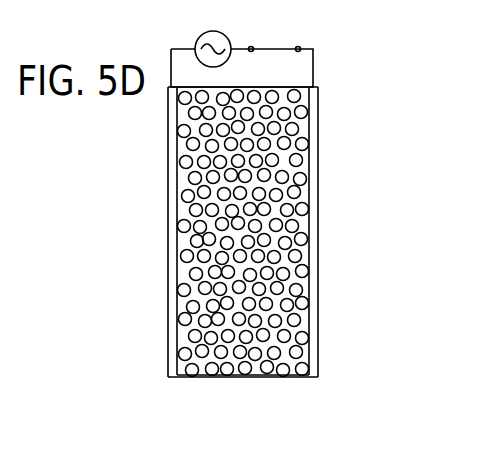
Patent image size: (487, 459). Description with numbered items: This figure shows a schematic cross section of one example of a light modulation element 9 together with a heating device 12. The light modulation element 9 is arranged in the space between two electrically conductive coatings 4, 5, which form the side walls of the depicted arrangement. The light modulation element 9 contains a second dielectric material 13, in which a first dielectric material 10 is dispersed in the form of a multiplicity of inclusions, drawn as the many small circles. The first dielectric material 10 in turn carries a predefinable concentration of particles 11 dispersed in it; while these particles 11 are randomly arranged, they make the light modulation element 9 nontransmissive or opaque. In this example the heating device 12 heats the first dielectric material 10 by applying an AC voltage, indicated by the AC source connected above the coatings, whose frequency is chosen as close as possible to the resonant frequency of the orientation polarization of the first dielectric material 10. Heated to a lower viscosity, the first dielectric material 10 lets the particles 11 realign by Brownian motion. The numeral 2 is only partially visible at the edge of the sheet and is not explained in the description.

The device 2 is at (222, 244).
The electrically conductive coating 4 is at (172, 342).
The electrically conductive coating 5 is at (312, 195).
The light modulation element 9 is at (272, 378).
The first dielectric material 10 is at (121, 226).
The particles 11 is at (183, 200).
The heating device 12 is at (313, 66).
The second dielectric material 13 is at (182, 148).